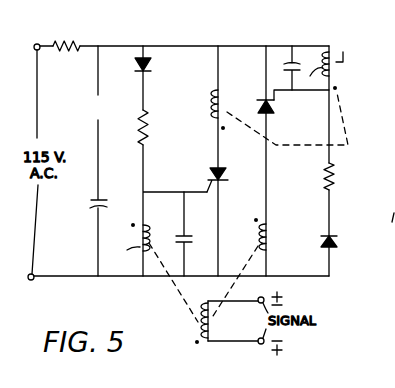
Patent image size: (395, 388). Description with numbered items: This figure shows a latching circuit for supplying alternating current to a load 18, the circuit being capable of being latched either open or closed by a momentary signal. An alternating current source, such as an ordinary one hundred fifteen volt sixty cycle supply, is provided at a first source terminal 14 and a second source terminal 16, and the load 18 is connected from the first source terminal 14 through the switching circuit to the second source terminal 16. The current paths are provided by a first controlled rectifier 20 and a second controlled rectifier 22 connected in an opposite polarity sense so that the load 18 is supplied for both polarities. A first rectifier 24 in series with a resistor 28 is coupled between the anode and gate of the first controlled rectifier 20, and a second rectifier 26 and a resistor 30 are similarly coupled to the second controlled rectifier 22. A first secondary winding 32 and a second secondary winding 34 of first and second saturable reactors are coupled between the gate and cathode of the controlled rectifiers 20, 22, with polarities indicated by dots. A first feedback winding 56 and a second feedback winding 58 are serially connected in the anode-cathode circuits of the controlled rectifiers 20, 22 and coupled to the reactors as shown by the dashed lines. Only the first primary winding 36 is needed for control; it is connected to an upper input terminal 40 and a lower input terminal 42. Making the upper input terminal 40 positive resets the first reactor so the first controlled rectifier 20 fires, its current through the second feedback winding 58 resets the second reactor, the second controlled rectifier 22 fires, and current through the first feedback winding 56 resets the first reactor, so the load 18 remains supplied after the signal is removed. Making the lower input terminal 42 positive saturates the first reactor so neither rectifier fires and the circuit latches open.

The first source terminal 14 is at (30, 39).
The load 18 is at (90, 30).
The second source terminal 16 is at (30, 281).
The first rectifier 24 is at (152, 66).
The resistor 28 is at (151, 128).
The second feedback winding 58 is at (213, 108).
The second controlled rectifier 22 is at (275, 107).
The second secondary winding 34 is at (336, 74).
The first controlled rectifier 20 is at (221, 170).
The resistor 30 is at (335, 179).
The second rectifier 26 is at (338, 240).
The first secondary winding 32 is at (140, 236).
The first feedback winding 56 is at (270, 236).
The first primary winding 36 is at (197, 327).
The upper input terminal 40 is at (258, 297).
The lower input terminal 42 is at (262, 345).